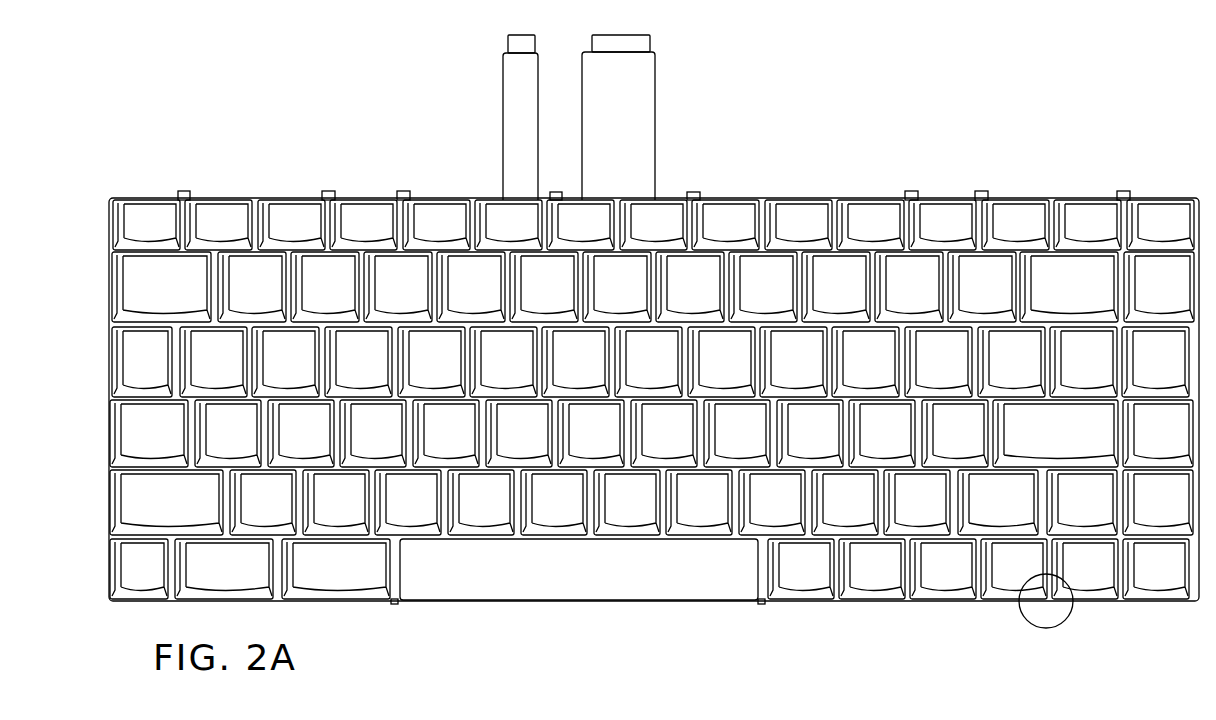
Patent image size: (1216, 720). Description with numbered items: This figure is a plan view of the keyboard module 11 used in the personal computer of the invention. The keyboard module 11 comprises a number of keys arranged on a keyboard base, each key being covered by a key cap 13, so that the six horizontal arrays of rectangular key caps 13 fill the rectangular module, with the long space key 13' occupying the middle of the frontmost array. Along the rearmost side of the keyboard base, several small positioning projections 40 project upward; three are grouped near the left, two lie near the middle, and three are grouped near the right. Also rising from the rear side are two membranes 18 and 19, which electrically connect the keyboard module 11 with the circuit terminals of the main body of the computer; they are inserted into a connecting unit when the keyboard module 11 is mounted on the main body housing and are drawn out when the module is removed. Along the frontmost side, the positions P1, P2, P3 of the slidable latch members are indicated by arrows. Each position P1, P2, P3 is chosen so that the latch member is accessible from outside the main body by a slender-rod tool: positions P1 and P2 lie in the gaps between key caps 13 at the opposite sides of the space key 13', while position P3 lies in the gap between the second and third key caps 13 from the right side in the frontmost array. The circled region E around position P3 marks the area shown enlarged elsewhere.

The keyboard module 11 is at (799, 146).
The key cap 13 is at (1120, 599).
The space key 13' is at (578, 594).
The membrane 18 is at (518, 77).
The membrane 19 is at (652, 65).
The positioning projection 40 is at (403, 191).
The enlarged area E is at (1020, 619).
The position of latch member P1 is at (395, 616).
The position of latch member P2 is at (763, 616).
The position of latch member P3 is at (1046, 617).